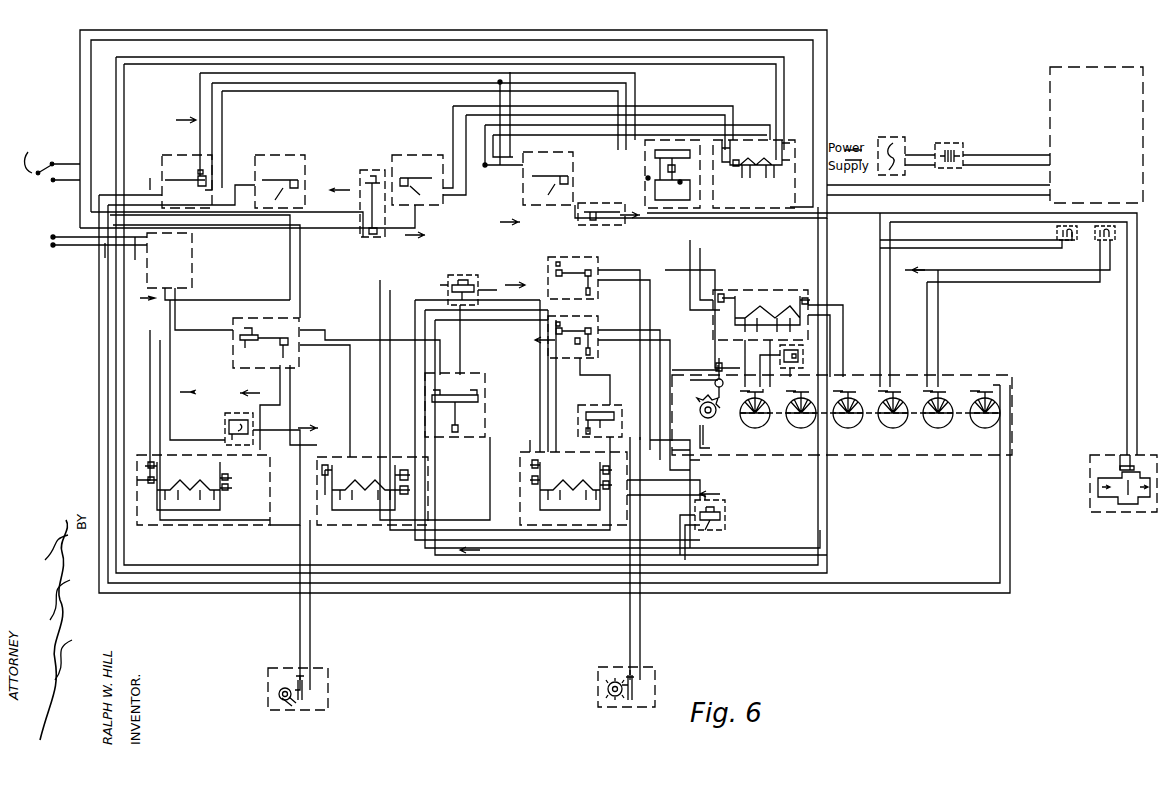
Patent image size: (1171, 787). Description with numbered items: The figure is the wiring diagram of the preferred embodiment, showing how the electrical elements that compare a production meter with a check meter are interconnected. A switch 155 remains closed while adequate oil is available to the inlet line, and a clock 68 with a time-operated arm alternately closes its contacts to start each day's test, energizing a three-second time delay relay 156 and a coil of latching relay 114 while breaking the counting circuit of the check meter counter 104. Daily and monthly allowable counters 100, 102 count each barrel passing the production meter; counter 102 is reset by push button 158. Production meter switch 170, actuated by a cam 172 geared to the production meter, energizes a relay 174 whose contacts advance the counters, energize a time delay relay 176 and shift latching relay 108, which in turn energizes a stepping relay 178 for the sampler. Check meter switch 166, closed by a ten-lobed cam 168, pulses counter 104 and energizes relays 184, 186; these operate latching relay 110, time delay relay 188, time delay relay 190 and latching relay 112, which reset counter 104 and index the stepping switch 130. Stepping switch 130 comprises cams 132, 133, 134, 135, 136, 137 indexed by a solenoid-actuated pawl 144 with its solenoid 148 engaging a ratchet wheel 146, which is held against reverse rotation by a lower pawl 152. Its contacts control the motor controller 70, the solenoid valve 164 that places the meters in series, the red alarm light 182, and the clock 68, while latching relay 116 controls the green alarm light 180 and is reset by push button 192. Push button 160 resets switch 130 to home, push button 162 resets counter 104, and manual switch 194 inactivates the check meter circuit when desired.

The clock 68 is at (183, 156).
The motor controller 70 is at (1086, 68).
The daily allowable predetermined counter 100 is at (279, 156).
The monthly allowable predetermined counter 102 is at (438, 156).
The check meter counter 104 is at (536, 158).
The latching relay 108 is at (232, 525).
The latching relay 110 is at (385, 458).
The latching relay 112 is at (545, 452).
The latching relay 114 is at (787, 162).
The latching relay 116 is at (736, 292).
The stepping switch 130 is at (865, 452).
The cam 132 is at (745, 432).
The cam 133 is at (791, 432).
The cam 134 is at (838, 432).
The cam 135 is at (883, 432).
The cam 136 is at (928, 432).
The cam 137 is at (975, 432).
The solenoid-actuated pawl 144 is at (715, 385).
The ratchet wheel 146 is at (712, 418).
The solenoid 148 is at (718, 363).
The lower pawl 152 is at (700, 450).
The switch 155 is at (52, 162).
The time delay relay 156 is at (646, 148).
The push button 158 is at (380, 170).
The push button 160 is at (714, 510).
The push button switch 162 is at (455, 305).
The solenoid valve 164 is at (1090, 456).
The check meter switch 166 is at (648, 670).
The cam 168 is at (616, 700).
The production meter switch 170 is at (326, 676).
The cam 172 is at (296, 704).
The relay 174 is at (292, 336).
The time delay relay 176 is at (234, 413).
The stepping relay 178 is at (192, 278).
The green alarm light 180 is at (1057, 230).
The red alarm light 182 is at (1097, 240).
The relay 184 is at (597, 272).
The relay 186 is at (597, 332).
The time delay relay 188 is at (452, 432).
The time delay relay 190 is at (615, 404).
The push button 192 is at (780, 352).
The manual switch 194 is at (600, 224).